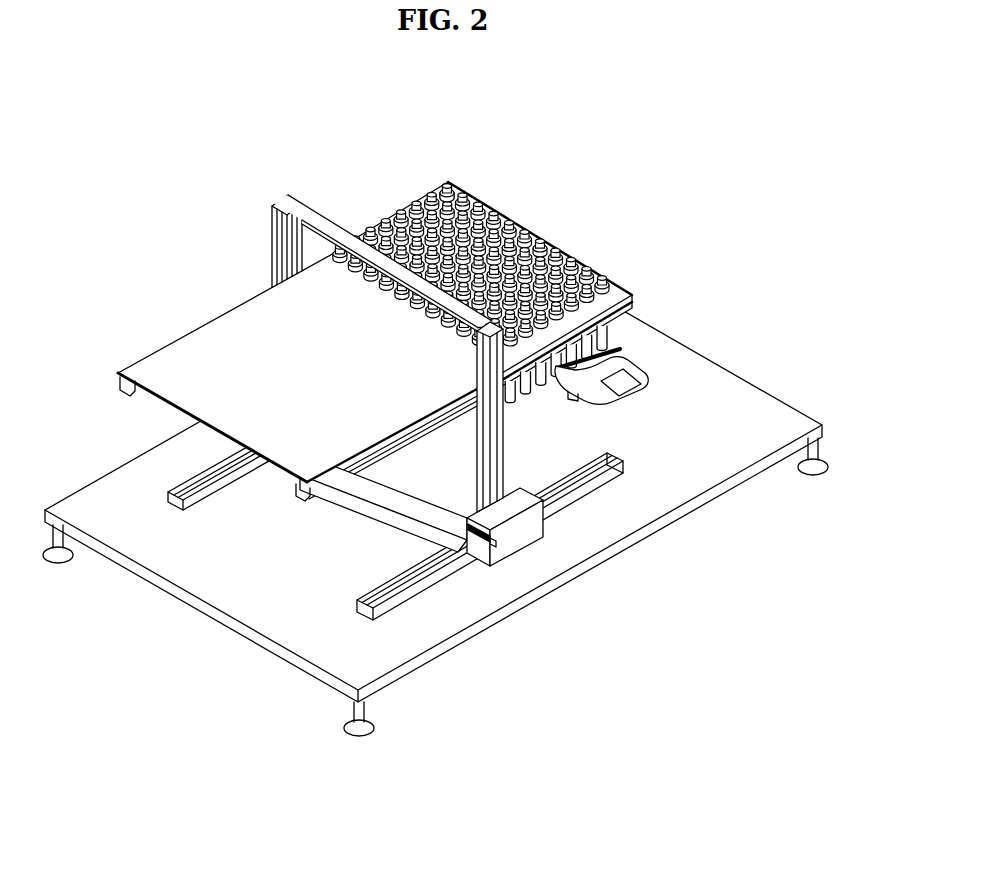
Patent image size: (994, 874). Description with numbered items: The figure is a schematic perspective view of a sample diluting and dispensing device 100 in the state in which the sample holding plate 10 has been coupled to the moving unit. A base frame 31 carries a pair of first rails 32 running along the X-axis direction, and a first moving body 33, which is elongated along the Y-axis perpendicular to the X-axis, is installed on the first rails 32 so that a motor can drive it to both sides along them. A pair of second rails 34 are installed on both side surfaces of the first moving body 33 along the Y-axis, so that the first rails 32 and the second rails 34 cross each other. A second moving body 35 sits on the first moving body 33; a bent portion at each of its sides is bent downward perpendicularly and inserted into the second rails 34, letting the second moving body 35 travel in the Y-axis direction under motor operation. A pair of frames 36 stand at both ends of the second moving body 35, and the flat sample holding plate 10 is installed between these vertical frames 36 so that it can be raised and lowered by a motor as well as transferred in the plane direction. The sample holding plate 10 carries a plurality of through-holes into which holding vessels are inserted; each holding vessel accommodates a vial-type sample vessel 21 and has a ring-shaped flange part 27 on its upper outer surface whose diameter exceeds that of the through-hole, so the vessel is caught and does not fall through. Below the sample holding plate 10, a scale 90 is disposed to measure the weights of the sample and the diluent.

The sample diluting and dispensing device 100 is at (652, 125).
The sample holding plate 10 is at (180, 360).
The sample vessel 21 is at (442, 186).
The flange part 27 is at (452, 190).
The base frame 31 is at (752, 415).
The first rail 32 is at (175, 487).
The first moving body 33 is at (537, 520).
The second rail 34 is at (487, 542).
The second moving body 35 is at (383, 480).
The frame 36 is at (275, 218).
The scale 90 is at (614, 368).